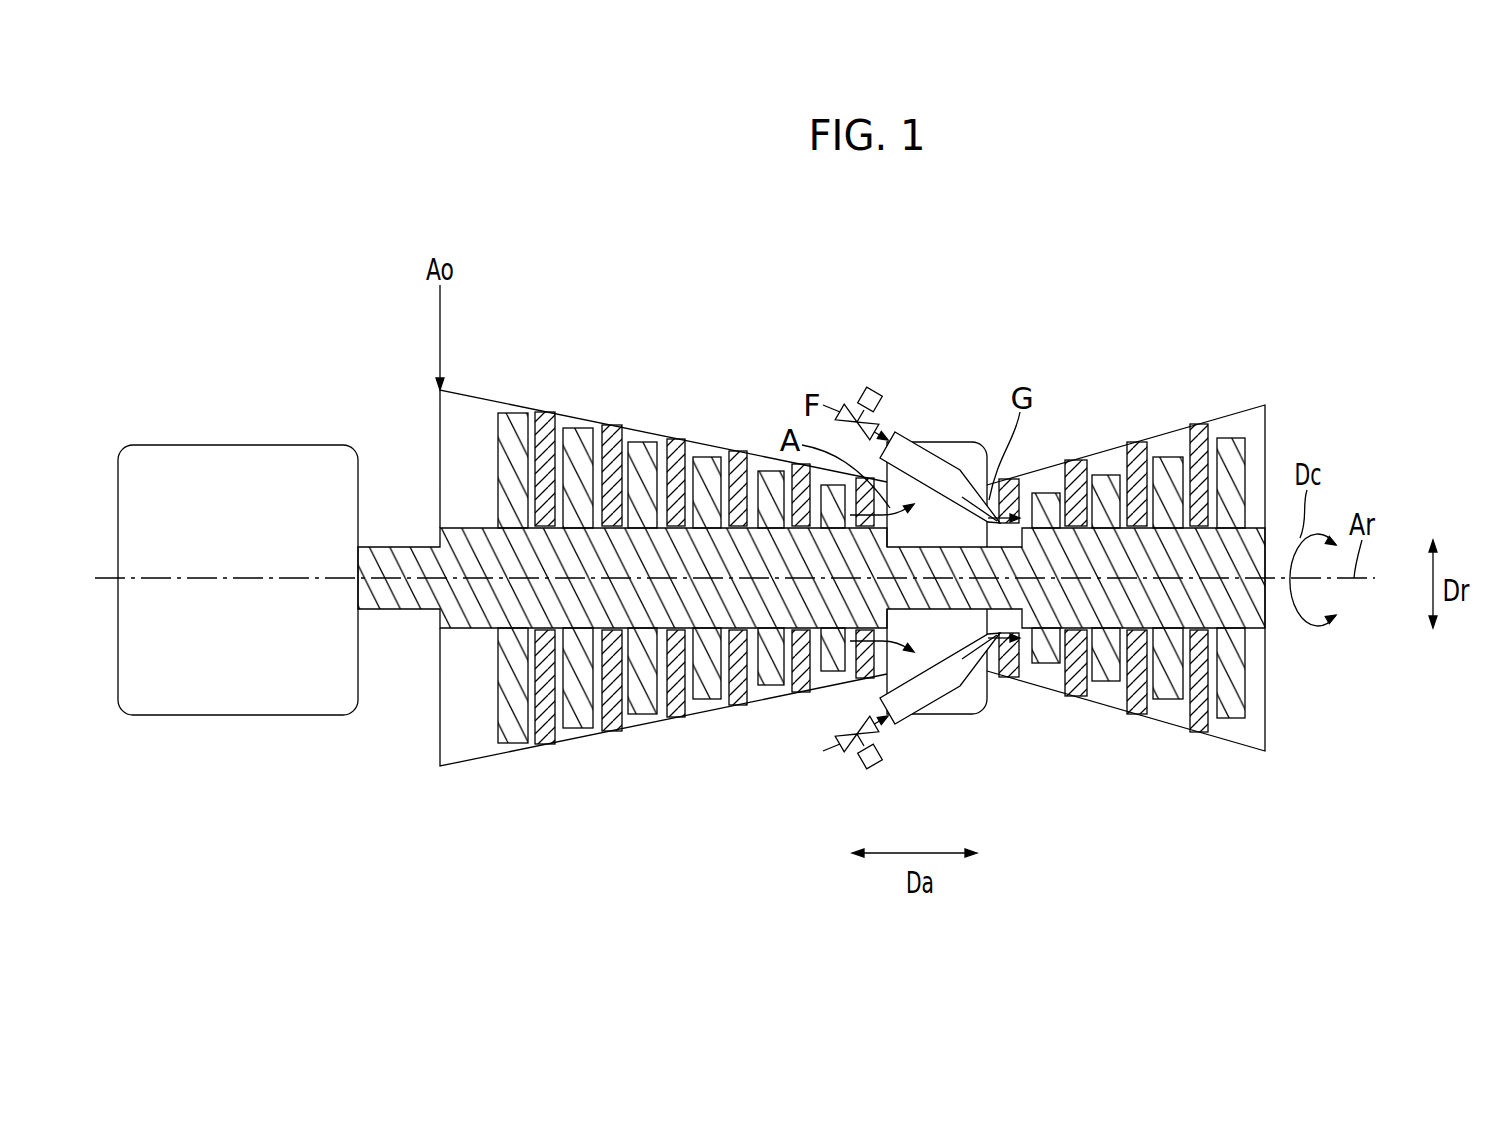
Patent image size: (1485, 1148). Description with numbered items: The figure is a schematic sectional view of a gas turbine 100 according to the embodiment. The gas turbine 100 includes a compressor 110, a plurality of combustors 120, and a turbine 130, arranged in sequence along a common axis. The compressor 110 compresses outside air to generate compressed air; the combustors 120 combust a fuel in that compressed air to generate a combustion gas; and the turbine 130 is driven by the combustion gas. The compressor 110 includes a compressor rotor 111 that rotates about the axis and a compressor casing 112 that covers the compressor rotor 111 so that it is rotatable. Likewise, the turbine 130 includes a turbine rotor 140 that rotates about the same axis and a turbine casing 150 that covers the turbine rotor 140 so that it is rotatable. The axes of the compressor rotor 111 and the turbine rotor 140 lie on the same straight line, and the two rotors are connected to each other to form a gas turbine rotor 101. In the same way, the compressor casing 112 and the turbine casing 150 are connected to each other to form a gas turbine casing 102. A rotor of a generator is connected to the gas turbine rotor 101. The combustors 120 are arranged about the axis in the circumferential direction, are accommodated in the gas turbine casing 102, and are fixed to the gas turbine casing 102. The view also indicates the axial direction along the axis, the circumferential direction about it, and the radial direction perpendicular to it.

The gas turbine 100 is at (1278, 292).
The gas turbine rotor 101 is at (942, 600).
The gas turbine casing 102 is at (958, 442).
The compressor 110 is at (638, 312).
The compressor rotor 111 is at (619, 556).
The compressor casing 112 is at (528, 410).
The combustor 120 is at (915, 437).
The turbine 130 is at (1137, 312).
The turbine rotor 140 is at (1107, 552).
The turbine casing 150 is at (1218, 420).